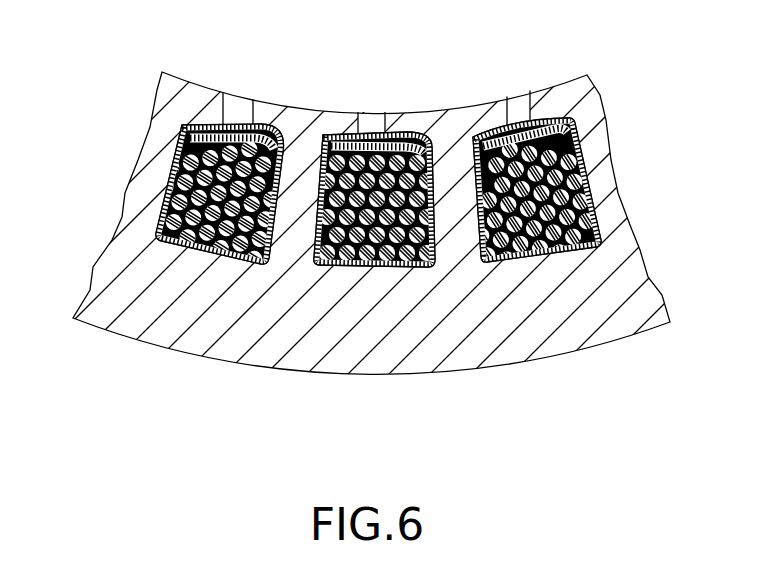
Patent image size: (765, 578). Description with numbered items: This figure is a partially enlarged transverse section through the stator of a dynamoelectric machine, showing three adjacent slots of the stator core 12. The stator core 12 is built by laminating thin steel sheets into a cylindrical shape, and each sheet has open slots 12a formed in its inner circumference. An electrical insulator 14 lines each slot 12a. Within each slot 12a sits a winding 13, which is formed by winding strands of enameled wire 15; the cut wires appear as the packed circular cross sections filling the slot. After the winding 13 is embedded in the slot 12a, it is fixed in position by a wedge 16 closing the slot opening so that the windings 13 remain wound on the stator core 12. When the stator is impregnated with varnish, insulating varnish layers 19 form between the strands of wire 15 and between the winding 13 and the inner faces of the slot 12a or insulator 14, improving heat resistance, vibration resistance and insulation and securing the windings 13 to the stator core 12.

The stator core 12 is at (123, 327).
The open slot 12a is at (180, 263).
The winding 13 is at (262, 123).
The insulator 14 is at (208, 258).
The enameled wire 15 is at (586, 175).
The wedge 16 is at (238, 117).
The insulating varnish layer 19 is at (311, 270).